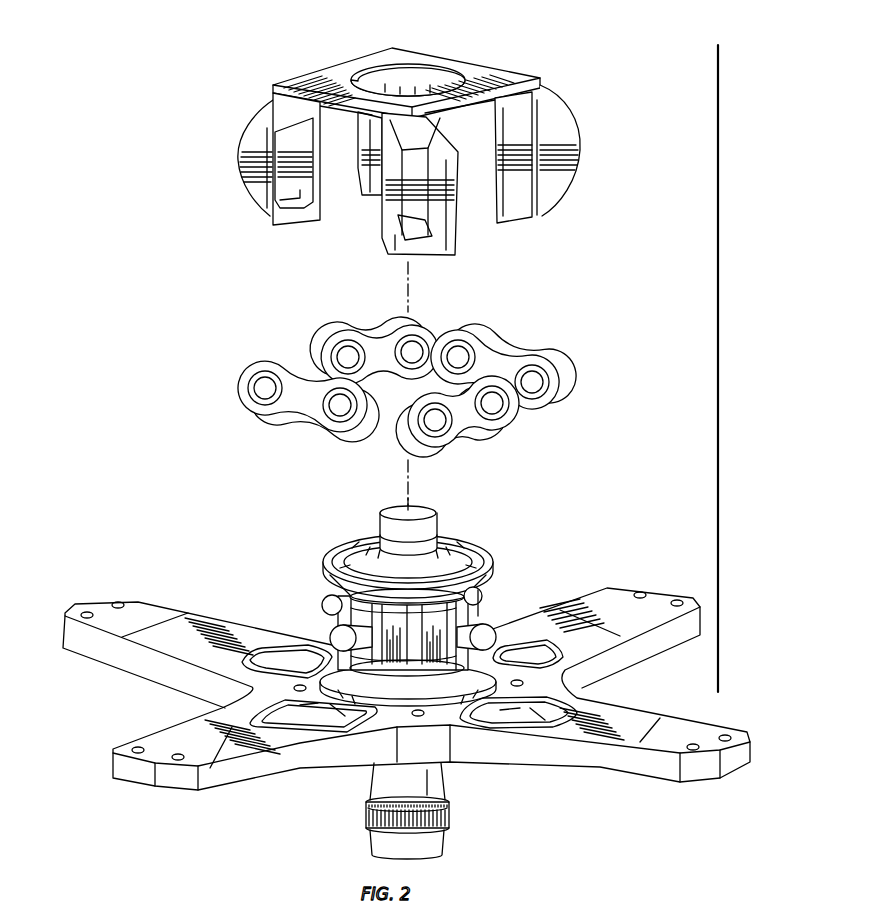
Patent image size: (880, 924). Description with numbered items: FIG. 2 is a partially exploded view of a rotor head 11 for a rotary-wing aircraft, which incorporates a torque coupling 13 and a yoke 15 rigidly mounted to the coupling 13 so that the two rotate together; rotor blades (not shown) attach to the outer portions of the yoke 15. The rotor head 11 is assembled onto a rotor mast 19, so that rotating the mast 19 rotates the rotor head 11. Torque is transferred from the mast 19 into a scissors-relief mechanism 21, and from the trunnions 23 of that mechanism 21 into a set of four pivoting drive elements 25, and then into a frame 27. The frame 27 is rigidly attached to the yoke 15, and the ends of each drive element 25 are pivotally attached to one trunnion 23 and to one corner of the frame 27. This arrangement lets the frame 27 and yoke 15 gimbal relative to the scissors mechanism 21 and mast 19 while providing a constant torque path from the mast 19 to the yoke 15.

The rotor head 11 is at (536, 36).
The torque coupling 13 is at (718, 365).
The yoke 15 is at (653, 722).
The rotor mast 19 is at (445, 836).
The scissors-relief mechanism 21 is at (492, 600).
The trunnion 23 is at (338, 630).
The drive element 25 is at (316, 415).
The frame 27 is at (423, 63).